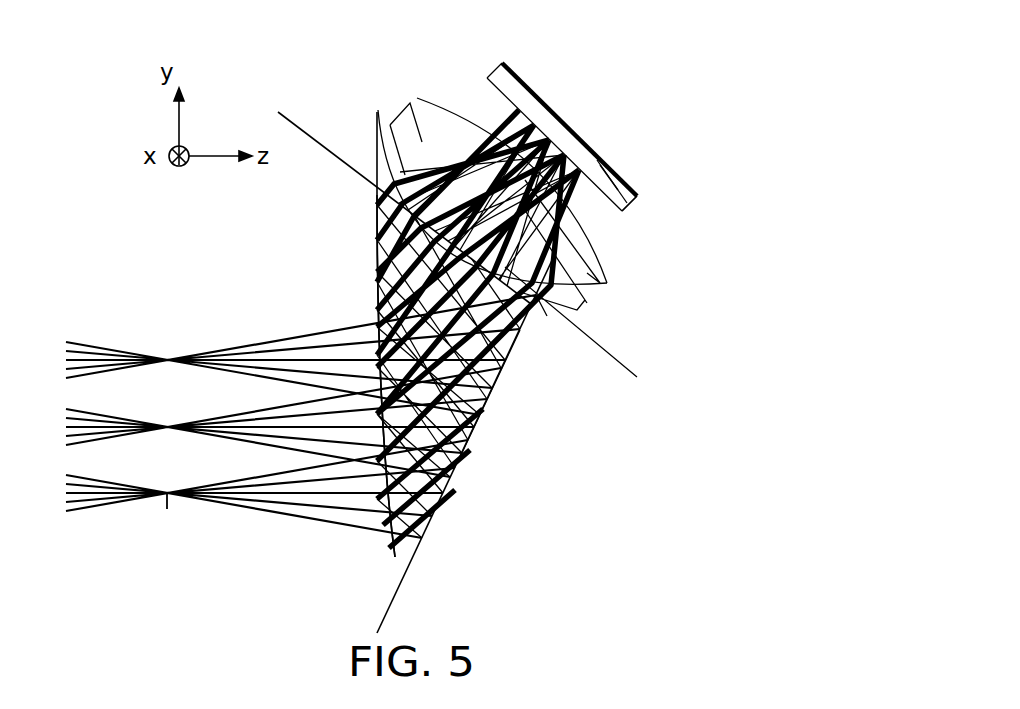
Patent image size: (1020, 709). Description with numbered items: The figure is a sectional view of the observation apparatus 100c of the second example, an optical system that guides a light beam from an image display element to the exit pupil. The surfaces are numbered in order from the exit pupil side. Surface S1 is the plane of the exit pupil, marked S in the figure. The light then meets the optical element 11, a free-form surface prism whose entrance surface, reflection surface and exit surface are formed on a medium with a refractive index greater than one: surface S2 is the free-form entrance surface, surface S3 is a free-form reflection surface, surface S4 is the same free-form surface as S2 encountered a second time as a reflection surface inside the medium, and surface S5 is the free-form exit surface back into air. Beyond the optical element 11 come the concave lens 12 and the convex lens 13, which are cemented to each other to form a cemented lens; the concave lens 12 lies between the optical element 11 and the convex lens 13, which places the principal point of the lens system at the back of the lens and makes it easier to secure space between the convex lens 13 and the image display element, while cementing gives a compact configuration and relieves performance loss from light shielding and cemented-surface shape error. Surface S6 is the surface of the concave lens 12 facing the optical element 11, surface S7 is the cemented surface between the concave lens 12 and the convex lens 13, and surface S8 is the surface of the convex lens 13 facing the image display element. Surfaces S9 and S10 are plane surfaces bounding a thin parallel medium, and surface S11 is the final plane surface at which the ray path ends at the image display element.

The observation apparatus 100c is at (809, 74).
The exit pupil surface S1 is at (167, 361).
The entrance surface of optical element S2 is at (376, 257).
The reflection surface of optical element S3 is at (457, 470).
The second-pass reflection surface of optical element S4 is at (386, 376).
The exit surface of optical element S5 is at (375, 153).
The entrance surface of concave lens S6 is at (397, 100).
The cemented surface S7 is at (410, 103).
The exit surface of convex lens S8 is at (470, 112).
The plane surface S9 is at (614, 228).
The plane surface S10 is at (618, 228).
The final plane surface S11 is at (645, 213).
The optical element 11 is at (520, 380).
The concave lens 12 is at (603, 333).
The convex lens 13 is at (616, 297).